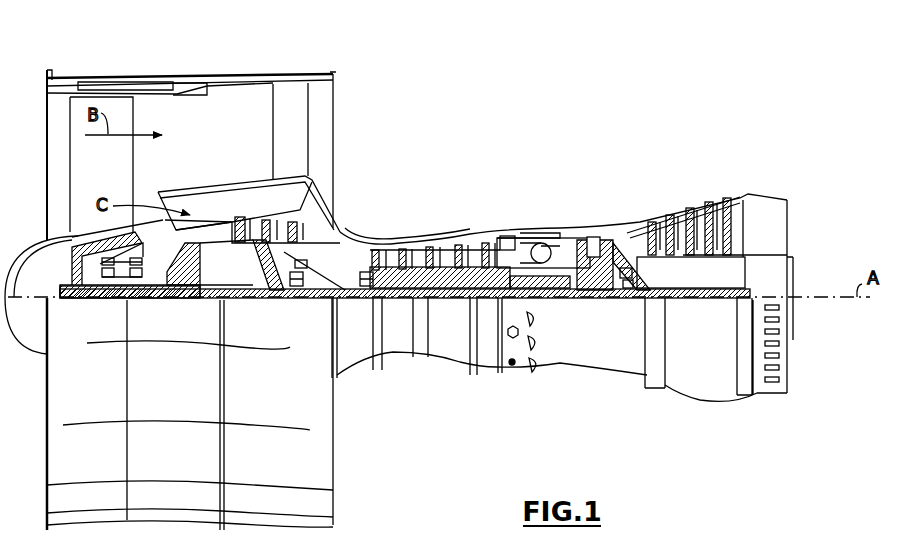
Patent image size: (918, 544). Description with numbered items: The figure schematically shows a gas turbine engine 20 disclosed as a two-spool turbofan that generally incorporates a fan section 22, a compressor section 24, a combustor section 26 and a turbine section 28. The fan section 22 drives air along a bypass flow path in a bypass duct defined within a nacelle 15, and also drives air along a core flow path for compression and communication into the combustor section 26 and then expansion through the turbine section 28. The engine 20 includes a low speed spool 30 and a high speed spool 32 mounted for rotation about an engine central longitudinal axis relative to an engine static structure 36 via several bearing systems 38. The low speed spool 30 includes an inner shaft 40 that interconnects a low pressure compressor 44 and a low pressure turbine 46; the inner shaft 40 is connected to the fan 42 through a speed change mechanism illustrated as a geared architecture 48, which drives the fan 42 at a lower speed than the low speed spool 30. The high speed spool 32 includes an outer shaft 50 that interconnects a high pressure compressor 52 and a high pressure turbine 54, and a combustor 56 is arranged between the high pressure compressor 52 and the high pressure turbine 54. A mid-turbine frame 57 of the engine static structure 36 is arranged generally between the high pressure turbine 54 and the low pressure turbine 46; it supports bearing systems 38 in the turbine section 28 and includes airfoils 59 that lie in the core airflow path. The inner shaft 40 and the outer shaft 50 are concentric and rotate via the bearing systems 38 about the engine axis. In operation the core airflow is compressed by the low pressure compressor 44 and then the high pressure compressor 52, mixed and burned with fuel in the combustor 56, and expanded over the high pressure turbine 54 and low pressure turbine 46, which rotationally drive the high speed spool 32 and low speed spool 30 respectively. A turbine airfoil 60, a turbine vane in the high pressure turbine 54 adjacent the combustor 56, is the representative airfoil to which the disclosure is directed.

The nacelle 15 is at (190, 80).
The gas turbine engine 20 is at (551, 113).
The fan section 22 is at (134, 68).
The compressor section 24 is at (470, 232).
The combustor section 26 is at (548, 214).
The turbine section 28 is at (688, 265).
The low speed spool 30 is at (458, 360).
The high speed spool 32 is at (493, 246).
The engine static structure 36 is at (485, 369).
The bearing systems 38 is at (627, 298).
The inner shaft 40 is at (350, 368).
The fan 42 is at (92, 173).
The low pressure compressor 44 is at (305, 191).
The low pressure turbine 46 is at (698, 205).
The geared architecture 48 is at (193, 290).
The outer shaft 50 is at (548, 299).
The high pressure compressor 52 is at (443, 248).
The high pressure turbine 54 is at (583, 234).
The combustor 56 is at (540, 245).
The mid-turbine frame 57 is at (622, 214).
The airfoils 59 is at (651, 270).
The turbine airfoil 60 is at (578, 233).